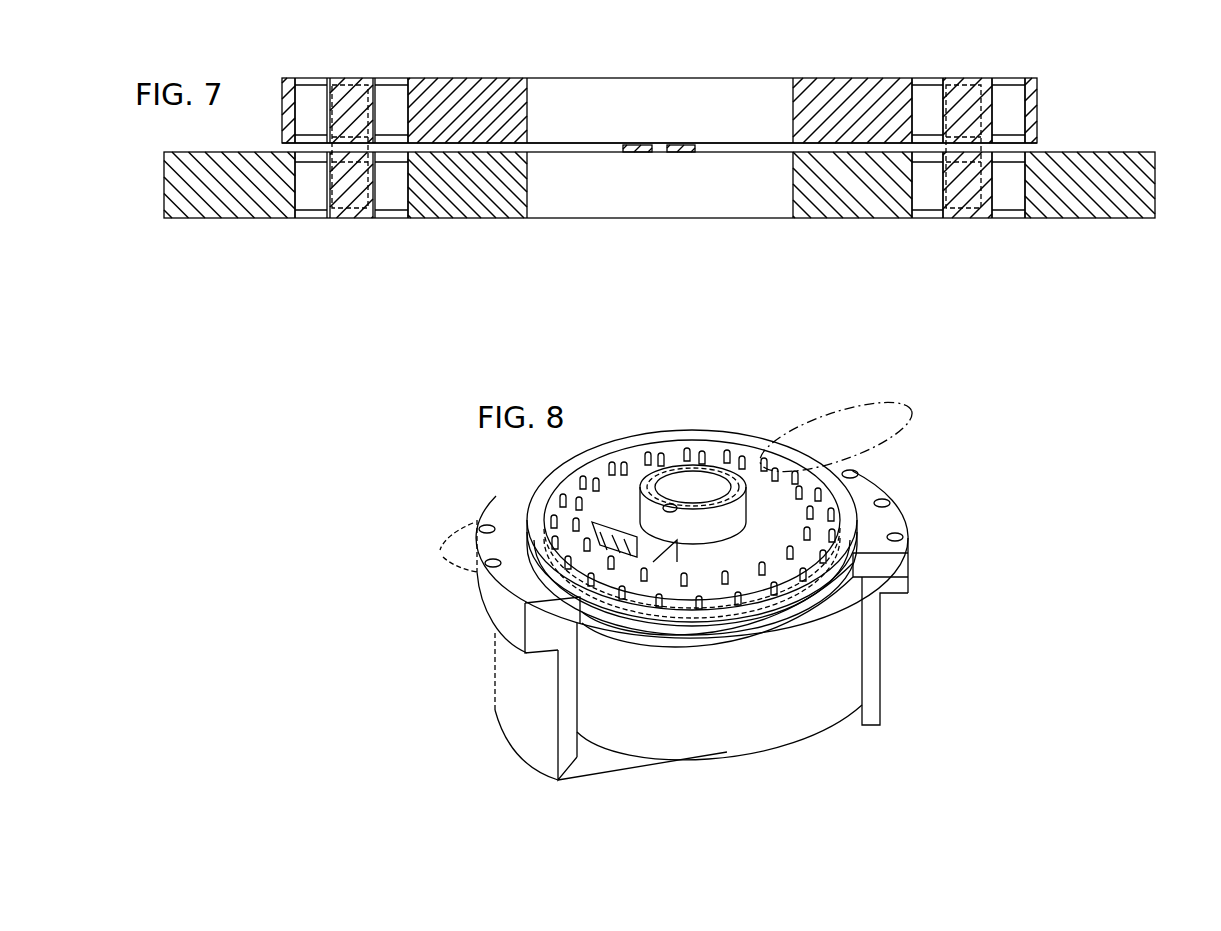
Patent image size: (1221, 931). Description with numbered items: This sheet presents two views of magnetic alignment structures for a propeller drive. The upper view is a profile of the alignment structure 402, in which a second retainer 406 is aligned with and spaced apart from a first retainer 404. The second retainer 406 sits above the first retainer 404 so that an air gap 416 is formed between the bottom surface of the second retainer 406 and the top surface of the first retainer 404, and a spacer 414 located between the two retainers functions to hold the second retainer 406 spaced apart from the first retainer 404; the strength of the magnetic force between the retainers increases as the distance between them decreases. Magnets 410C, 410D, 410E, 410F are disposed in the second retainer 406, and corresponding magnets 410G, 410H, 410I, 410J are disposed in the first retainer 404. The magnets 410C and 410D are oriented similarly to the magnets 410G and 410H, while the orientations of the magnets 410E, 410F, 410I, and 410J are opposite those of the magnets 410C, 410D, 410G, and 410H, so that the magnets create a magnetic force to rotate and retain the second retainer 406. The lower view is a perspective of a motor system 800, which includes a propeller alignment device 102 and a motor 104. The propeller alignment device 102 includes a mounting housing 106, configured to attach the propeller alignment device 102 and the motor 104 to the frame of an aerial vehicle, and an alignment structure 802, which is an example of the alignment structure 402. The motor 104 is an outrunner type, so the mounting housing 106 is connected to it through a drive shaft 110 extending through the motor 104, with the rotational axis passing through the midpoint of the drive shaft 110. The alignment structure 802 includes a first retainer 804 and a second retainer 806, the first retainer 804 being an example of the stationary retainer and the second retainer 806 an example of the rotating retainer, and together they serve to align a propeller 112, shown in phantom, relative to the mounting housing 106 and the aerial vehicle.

In FIG. 7, the alignment structure 402 is at (1075, 68).
In FIG. 7, the first retainer 404 is at (1147, 180).
In FIG. 7, the second retainer 406 is at (1032, 97).
In FIG. 7, the magnet 410C is at (318, 85).
In FIG. 7, the magnet 410D is at (405, 97).
In FIG. 7, the magnet 410E is at (915, 97).
In FIG. 7, the magnet 410F is at (1003, 87).
In FIG. 7, the magnet 410G is at (318, 212).
In FIG. 7, the magnet 410H is at (405, 200).
In FIG. 7, the magnet 410I is at (915, 197).
In FIG. 7, the magnet 410J is at (1003, 212).
In FIG. 7, the spacer 414 is at (682, 152).
In FIG. 7, the air gap 416 is at (285, 145).
In FIG. 8, the motor system 800 is at (732, 396).
In FIG. 8, the alignment structure 802 is at (918, 495).
In FIG. 8, the propeller alignment device 102 is at (930, 568).
In FIG. 8, the motor 104 is at (777, 748).
In FIG. 8, the mounting housing 106 is at (873, 705).
In FIG. 8, the drive shaft 110 is at (677, 463).
In FIG. 8, the propeller 112 is at (867, 402).
In FIG. 8, the first retainer 804 is at (535, 614).
In FIG. 8, the second retainer 806 is at (657, 603).